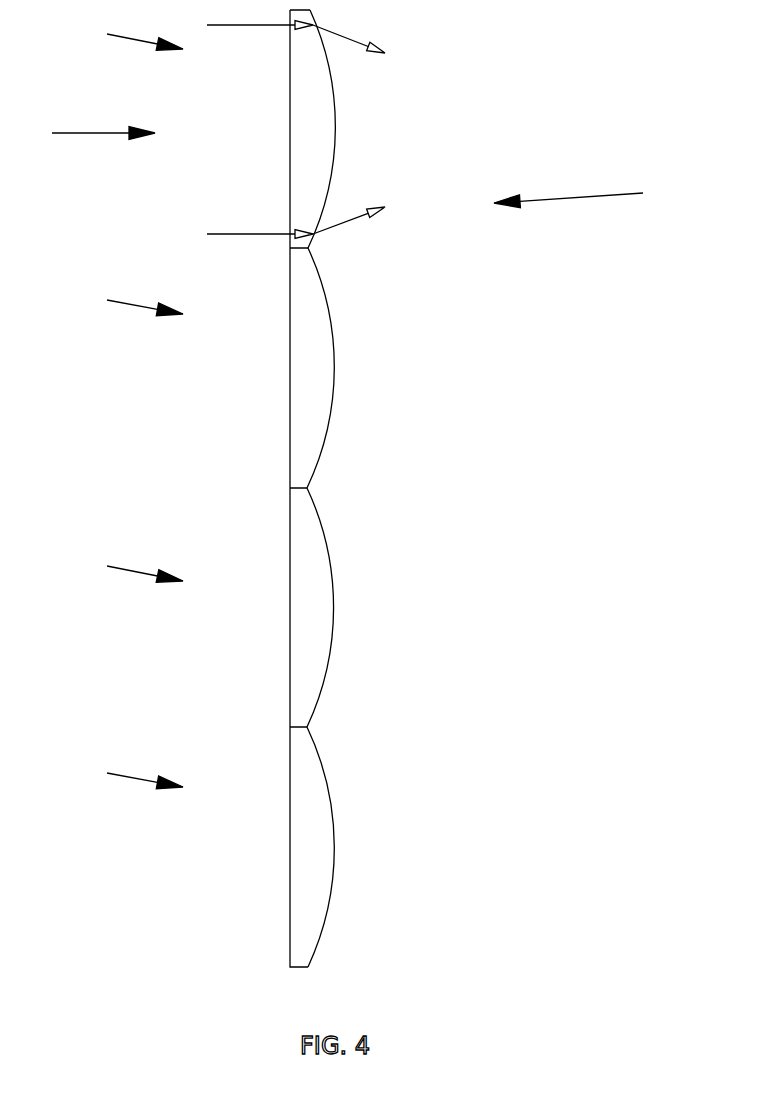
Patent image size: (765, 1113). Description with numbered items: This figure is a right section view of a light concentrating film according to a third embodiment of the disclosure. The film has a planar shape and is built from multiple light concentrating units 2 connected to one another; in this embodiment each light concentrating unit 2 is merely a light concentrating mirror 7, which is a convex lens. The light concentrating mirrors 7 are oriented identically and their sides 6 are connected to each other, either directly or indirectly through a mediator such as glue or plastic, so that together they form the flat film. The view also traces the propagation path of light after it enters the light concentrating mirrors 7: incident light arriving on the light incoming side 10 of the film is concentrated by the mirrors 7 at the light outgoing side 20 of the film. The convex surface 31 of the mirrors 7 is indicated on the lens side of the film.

The light concentrating unit 2 is at (134, 407).
The side 6 is at (308, 248).
The light concentrating mirror 7 is at (290, 173).
The light incoming side 10 is at (206, 130).
The light outgoing side 20 is at (583, 194).
The convex lens surface 31 is at (335, 368).